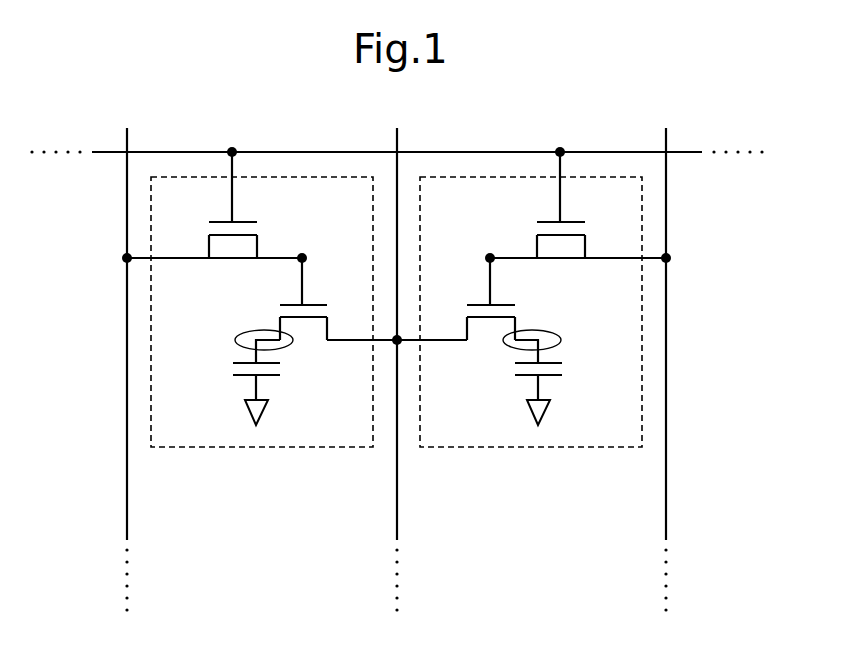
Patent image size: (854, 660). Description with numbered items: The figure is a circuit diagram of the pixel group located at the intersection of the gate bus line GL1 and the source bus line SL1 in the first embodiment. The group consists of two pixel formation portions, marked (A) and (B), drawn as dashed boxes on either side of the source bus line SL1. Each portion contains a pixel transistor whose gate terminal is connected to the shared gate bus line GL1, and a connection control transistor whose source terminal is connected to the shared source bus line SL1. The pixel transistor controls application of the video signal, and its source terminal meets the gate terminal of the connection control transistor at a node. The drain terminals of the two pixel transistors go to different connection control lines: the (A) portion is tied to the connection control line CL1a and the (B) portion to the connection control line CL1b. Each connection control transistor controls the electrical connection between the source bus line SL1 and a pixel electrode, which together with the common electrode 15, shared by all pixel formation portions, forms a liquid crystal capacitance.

The gate bus line GL1 is at (308, 151).
The connection control line CL1a is at (128, 498).
The connection control line CL1b is at (668, 498).
The source bus line SL1 is at (399, 498).
The common electrode 15 is at (268, 410).